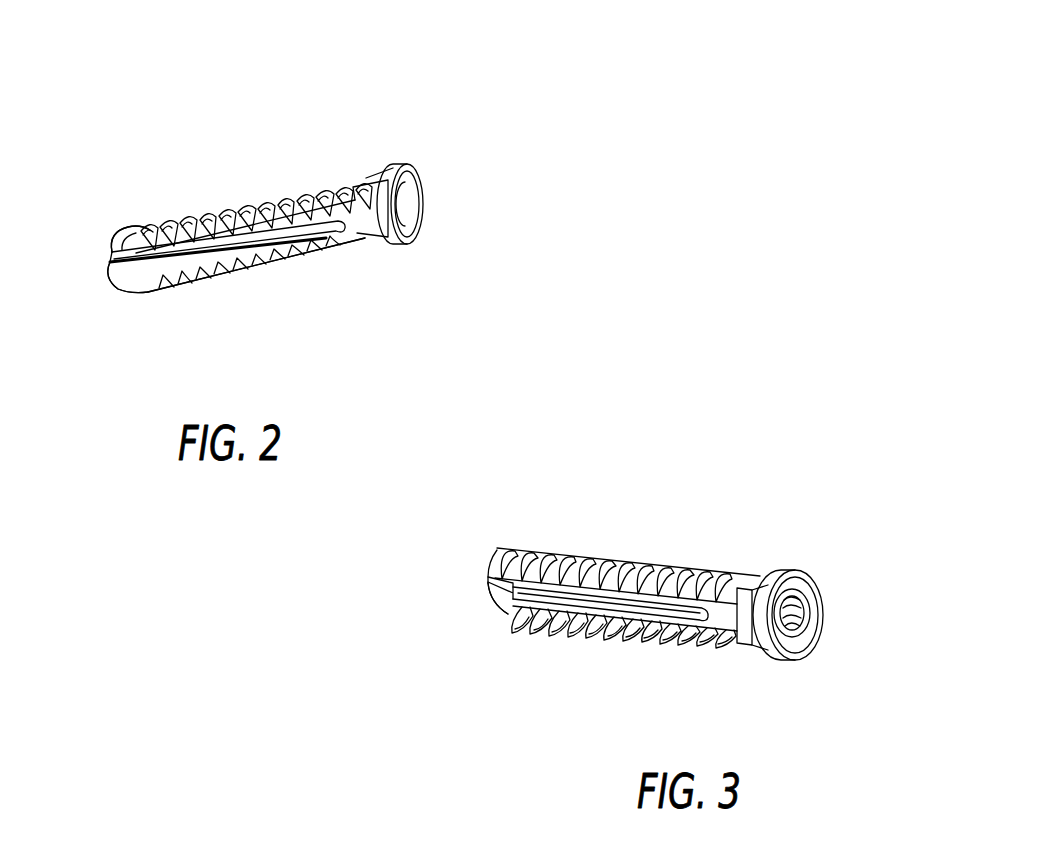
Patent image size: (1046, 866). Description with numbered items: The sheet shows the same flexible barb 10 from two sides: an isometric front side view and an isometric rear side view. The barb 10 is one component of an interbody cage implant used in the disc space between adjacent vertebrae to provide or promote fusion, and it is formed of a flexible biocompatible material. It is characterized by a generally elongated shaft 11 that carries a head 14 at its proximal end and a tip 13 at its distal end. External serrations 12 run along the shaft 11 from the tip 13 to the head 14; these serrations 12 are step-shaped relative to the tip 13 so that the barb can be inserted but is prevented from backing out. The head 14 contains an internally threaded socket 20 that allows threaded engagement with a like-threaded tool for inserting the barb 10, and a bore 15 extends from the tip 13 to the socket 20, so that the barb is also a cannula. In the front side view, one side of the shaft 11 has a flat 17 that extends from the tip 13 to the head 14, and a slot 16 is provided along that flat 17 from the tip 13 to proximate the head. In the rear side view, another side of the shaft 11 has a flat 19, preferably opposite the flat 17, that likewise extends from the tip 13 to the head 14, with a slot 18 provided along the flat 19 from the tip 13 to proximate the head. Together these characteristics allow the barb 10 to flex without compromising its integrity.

In FIG. 2, the barb 10 is at (88, 72).
In FIG. 3, the barb 10 is at (778, 390).
In FIG. 2, the shaft 11 is at (163, 306).
In FIG. 3, the shaft 11 is at (665, 562).
In FIG. 2, the serrations 12 is at (232, 200).
In FIG. 3, the serrations 12 is at (585, 557).
In FIG. 2, the tip 13 is at (130, 284).
In FIG. 3, the tip 13 is at (480, 583).
In FIG. 2, the head 14 is at (412, 185).
In FIG. 3, the head 14 is at (793, 578).
In FIG. 2, the bore 15 is at (99, 259).
In FIG. 3, the bore 15 is at (476, 568).
In FIG. 2, the slot 16 is at (283, 197).
In FIG. 2, the flat 17 is at (373, 228).
In FIG. 2, the slot 18 is at (110, 245).
In FIG. 3, the slot 18 is at (605, 603).
In FIG. 3, the flat 19 is at (733, 612).
In FIG. 3, the internally threaded socket 20 is at (800, 614).